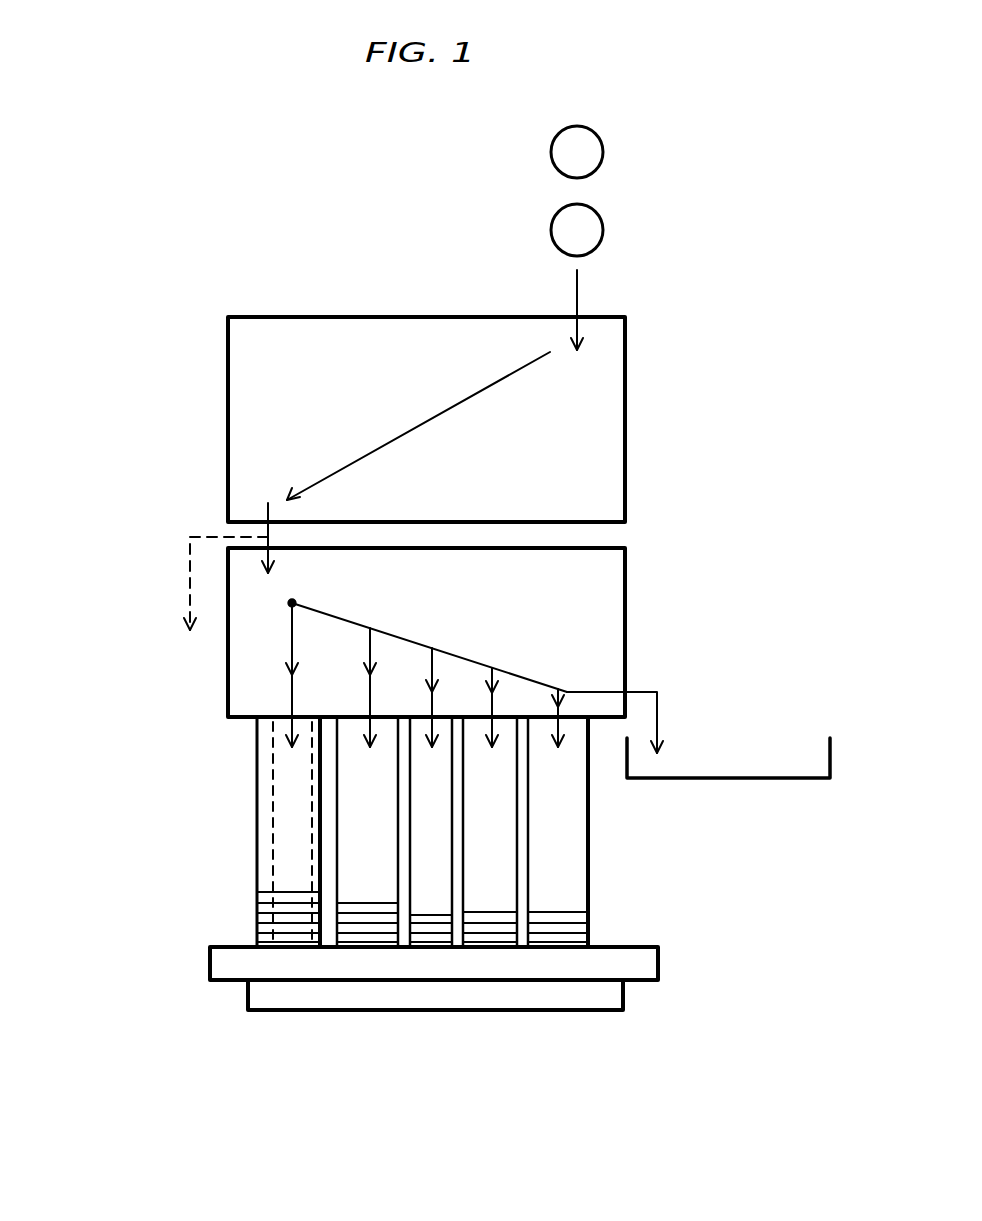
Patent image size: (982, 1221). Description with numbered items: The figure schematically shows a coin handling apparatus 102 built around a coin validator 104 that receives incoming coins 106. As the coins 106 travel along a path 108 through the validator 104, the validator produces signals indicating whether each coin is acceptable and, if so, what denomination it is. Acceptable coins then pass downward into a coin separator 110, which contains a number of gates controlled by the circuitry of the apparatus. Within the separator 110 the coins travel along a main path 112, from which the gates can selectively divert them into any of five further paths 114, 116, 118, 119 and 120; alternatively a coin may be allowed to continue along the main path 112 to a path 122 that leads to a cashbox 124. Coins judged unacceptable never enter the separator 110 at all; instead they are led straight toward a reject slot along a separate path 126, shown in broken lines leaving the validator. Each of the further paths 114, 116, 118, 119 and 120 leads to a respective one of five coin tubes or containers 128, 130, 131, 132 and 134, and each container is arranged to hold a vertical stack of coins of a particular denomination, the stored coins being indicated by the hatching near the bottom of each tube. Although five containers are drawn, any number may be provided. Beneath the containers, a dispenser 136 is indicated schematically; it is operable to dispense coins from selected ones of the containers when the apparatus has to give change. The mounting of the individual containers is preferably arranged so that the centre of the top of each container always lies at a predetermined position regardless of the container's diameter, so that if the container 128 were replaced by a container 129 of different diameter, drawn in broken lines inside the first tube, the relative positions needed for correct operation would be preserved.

The coin handling apparatus 102 is at (200, 435).
The coin validator 104 is at (602, 412).
The coins 106 is at (603, 148).
The path 108 is at (410, 428).
The coin separator 110 is at (592, 606).
The main path 112 is at (348, 592).
The further path 114 is at (294, 636).
The further path 116 is at (375, 642).
The further path 118 is at (434, 660).
The further path 119 is at (494, 677).
The further path 120 is at (561, 697).
The path 122 is at (658, 710).
The cashbox 124 is at (831, 757).
The path 126 is at (190, 560).
The coin tube or container 128 is at (263, 840).
The container of different diameter 129 is at (270, 763).
The coin tube or container 130 is at (367, 883).
The coin tube or container 131 is at (427, 807).
The coin tube or container 132 is at (495, 827).
The coin tube or container 134 is at (555, 878).
The dispenser 136 is at (628, 943).